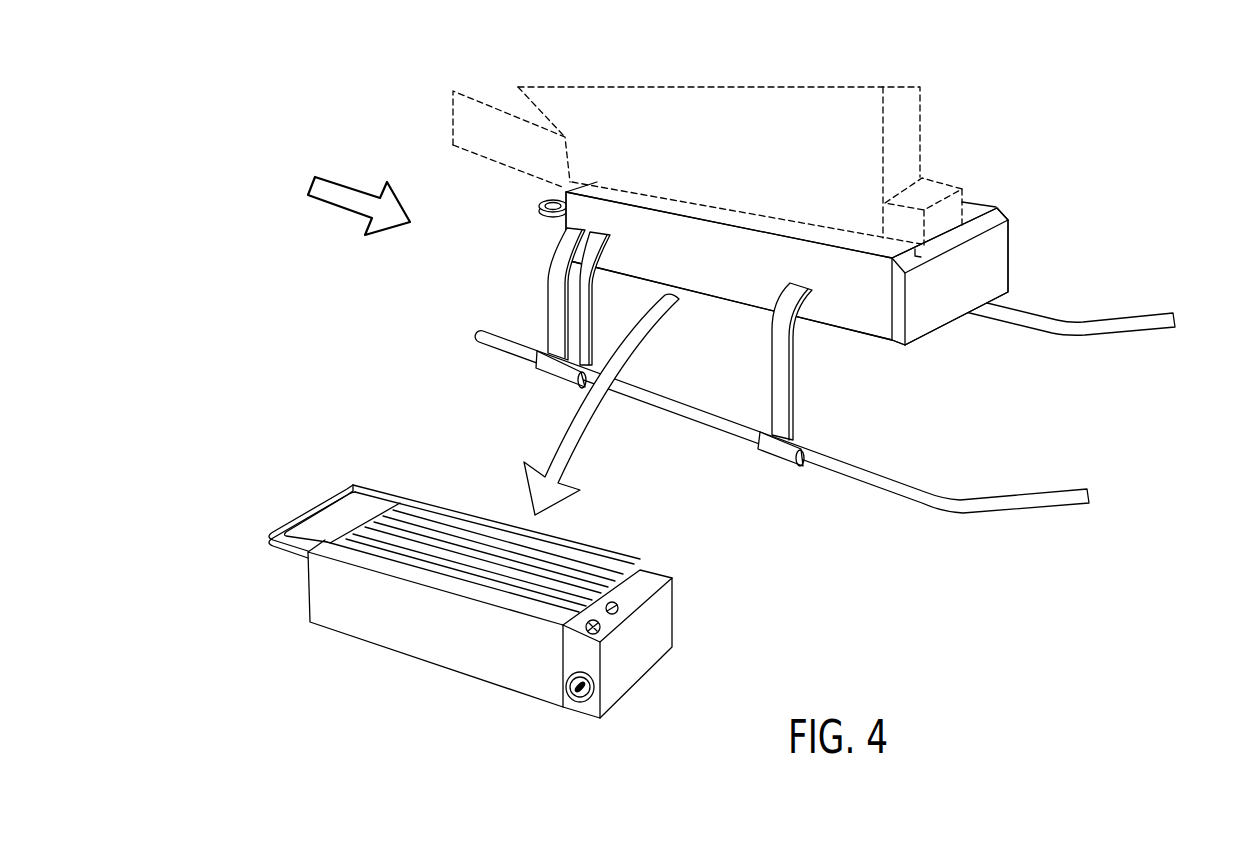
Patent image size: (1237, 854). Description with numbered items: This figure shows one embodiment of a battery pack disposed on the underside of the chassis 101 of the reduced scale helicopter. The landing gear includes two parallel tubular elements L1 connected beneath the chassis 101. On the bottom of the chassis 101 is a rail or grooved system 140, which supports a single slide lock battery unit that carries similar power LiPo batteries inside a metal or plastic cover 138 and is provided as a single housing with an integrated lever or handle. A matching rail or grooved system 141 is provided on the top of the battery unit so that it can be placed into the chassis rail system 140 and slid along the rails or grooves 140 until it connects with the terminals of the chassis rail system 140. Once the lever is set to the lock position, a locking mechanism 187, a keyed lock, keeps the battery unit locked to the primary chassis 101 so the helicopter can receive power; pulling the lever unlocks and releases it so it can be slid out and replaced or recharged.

The chassis 101 is at (737, 82).
The metal/plastic cover 138 is at (570, 545).
The rail or grooved system 140 is at (651, 193).
The matching rail/grooved system 141 is at (430, 512).
The locking mechanism 187 is at (580, 700).
The tubular elements L1 is at (1096, 336).